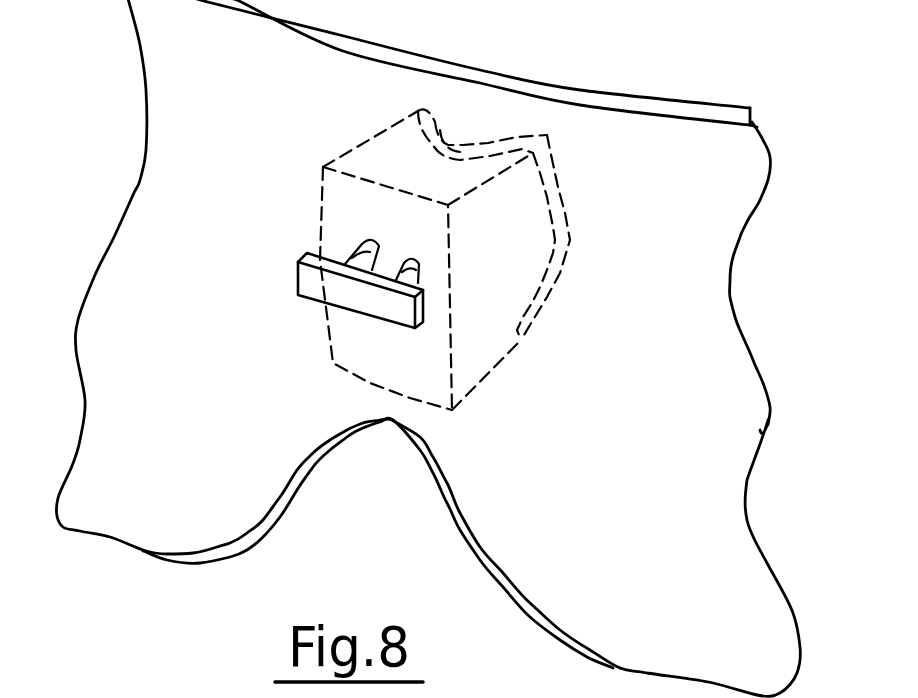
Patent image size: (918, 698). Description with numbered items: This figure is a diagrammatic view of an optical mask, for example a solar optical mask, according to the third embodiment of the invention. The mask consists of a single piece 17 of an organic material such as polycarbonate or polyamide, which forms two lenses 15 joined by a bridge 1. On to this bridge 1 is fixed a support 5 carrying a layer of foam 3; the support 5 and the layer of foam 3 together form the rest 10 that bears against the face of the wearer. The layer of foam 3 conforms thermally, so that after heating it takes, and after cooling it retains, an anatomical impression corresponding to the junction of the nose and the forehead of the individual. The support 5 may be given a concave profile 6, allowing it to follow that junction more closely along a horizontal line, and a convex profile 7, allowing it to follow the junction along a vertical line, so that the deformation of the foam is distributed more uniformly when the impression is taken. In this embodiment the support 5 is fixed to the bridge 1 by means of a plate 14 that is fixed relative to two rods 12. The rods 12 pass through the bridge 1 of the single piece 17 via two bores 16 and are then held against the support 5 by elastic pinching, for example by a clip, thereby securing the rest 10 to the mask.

The bridge 1 is at (383, 408).
The layer of foam 3 is at (549, 163).
The support 5 is at (477, 358).
The concave profile 6 is at (463, 146).
The convex profile 7 is at (563, 202).
The rest 10 is at (520, 451).
The rods 12 is at (365, 248).
The plate 14 is at (317, 288).
The lenses 15 is at (167, 183).
The bores 16 is at (383, 251).
The single piece 17 is at (717, 413).